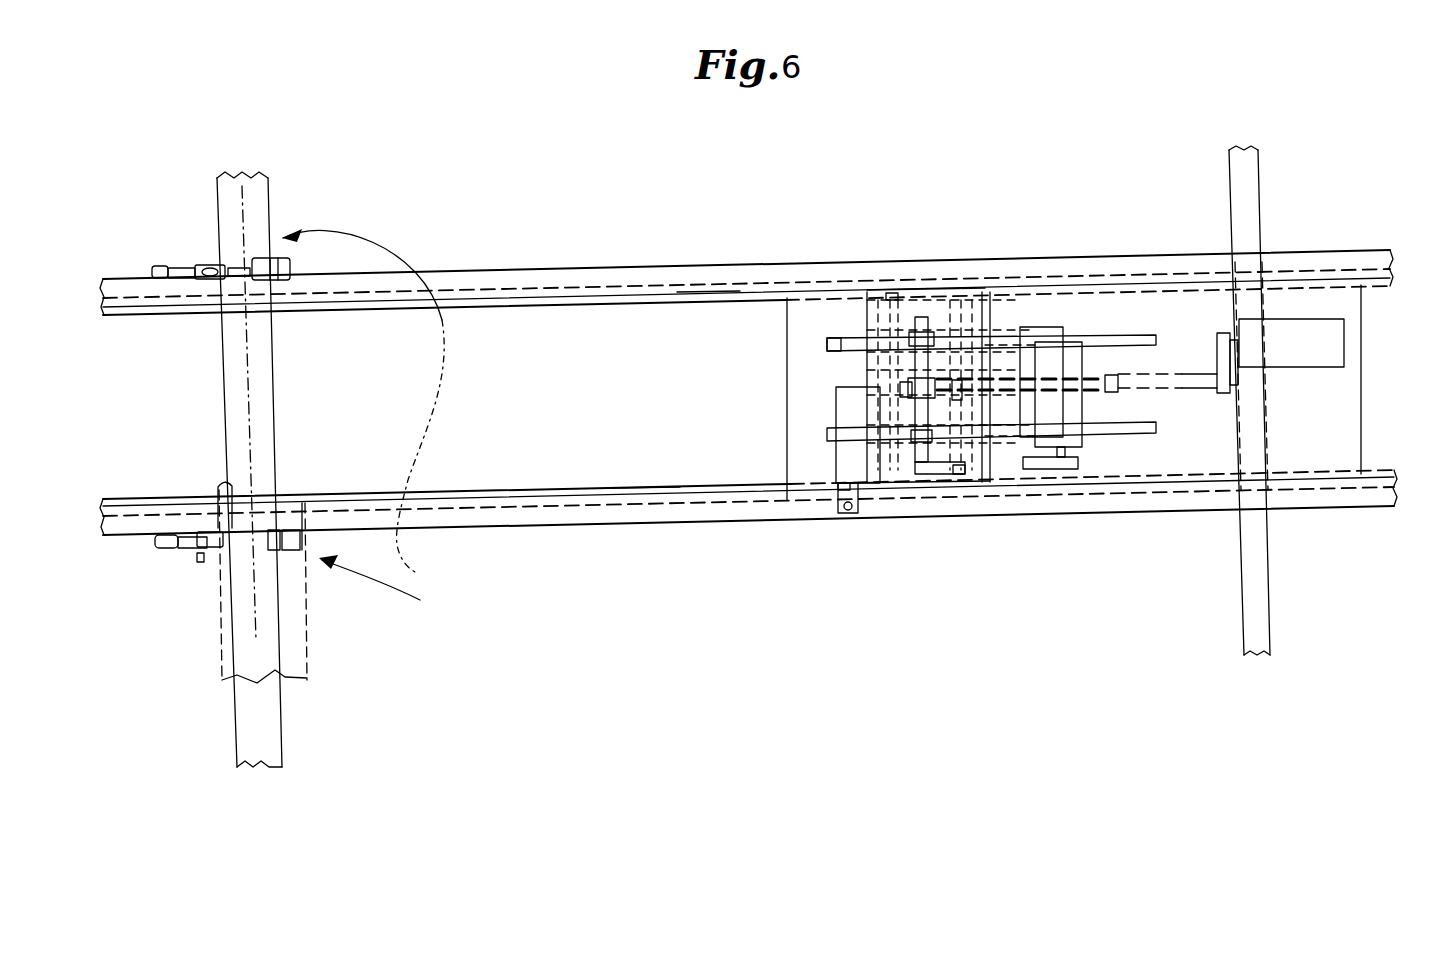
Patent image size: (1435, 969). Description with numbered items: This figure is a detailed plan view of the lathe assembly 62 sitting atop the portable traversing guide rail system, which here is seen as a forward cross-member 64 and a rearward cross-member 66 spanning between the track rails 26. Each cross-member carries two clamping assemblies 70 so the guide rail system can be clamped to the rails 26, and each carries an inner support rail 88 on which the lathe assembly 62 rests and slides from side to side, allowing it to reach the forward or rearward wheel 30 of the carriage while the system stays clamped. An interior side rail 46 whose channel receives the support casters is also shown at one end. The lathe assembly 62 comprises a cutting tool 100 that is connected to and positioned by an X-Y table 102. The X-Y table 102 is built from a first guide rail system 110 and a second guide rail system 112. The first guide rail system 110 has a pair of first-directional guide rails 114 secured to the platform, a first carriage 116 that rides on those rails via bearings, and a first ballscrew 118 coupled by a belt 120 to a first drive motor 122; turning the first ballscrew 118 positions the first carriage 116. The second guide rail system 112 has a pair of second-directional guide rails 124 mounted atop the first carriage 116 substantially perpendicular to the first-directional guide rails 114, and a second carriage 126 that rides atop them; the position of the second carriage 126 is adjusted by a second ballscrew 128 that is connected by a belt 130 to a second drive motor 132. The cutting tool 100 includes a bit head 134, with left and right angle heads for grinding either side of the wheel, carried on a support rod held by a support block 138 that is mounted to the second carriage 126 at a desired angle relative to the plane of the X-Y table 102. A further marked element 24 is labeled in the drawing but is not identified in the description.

The rotation direction arrow 24 is at (984, 231).
The rail 26 is at (258, 178).
The wheel 30 is at (300, 630).
The interior side rail 46 is at (1262, 615).
The lathe assembly 62 is at (1090, 319).
The forward cross-member 64 is at (585, 512).
The rearward cross-member 66 is at (562, 272).
The clamping assembly 70 is at (196, 268).
The inner support rail 88 is at (678, 293).
The cutting tool 100 is at (820, 457).
The X-Y table 102 is at (826, 338).
The first guide rail system 110 is at (1150, 435).
The second guide rail system 112 is at (908, 290).
The first-directional guide rails 114 is at (1152, 339).
The first carriage 116 is at (1015, 360).
The first ballscrew 118 is at (1110, 374).
The belt 120 is at (1232, 392).
The first drive motor 122 is at (1330, 347).
The second-directional guide rails 124 is at (905, 478).
The second carriage 126 is at (863, 292).
The second ballscrew 128 is at (942, 290).
The belt 130 is at (1023, 468).
The second drive motor 132 is at (1080, 444).
The bit head 134 is at (852, 515).
The support block 138 is at (836, 395).